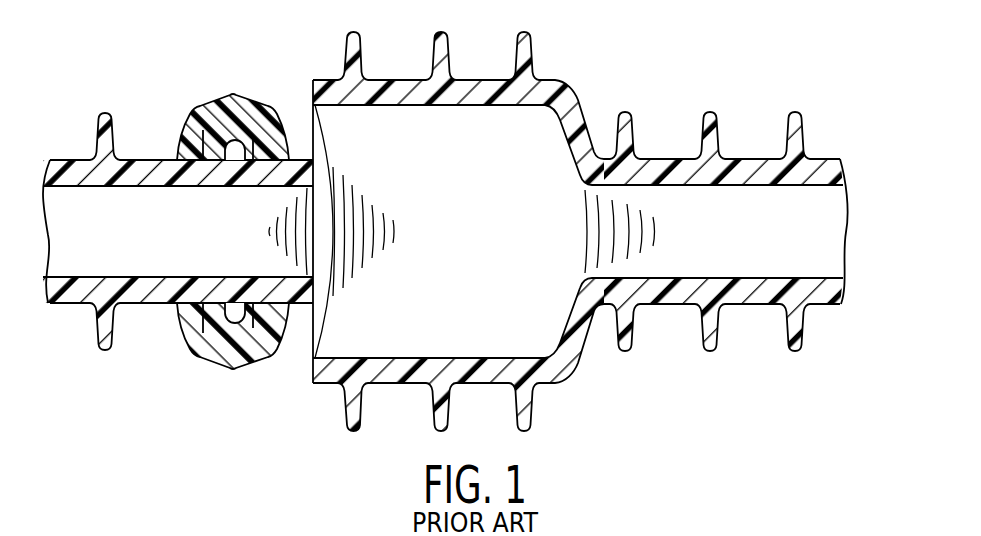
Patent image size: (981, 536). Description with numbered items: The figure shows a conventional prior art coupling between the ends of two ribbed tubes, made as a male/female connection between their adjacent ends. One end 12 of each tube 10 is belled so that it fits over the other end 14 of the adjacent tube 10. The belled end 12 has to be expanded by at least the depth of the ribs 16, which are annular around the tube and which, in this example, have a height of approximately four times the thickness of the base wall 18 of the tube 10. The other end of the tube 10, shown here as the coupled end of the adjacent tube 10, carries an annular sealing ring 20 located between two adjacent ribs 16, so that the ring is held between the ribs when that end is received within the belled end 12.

The tube 10 is at (446, 236).
The belled end 12 is at (367, 62).
The other end 14 is at (187, 187).
The ribs 16 is at (798, 140).
The base wall 18 is at (794, 184).
The annular sealing ring 20 is at (238, 100).